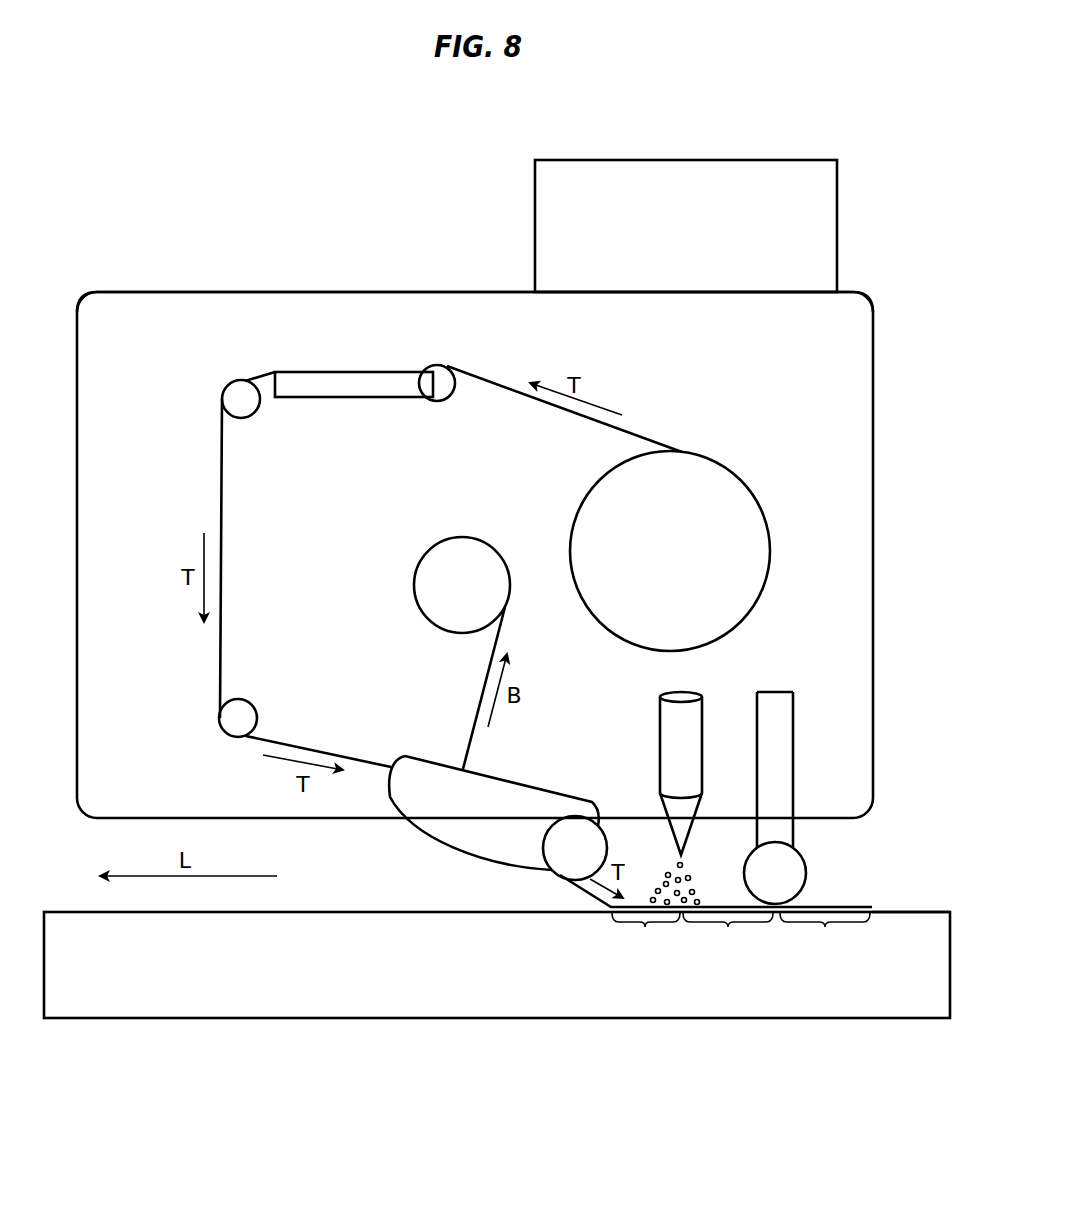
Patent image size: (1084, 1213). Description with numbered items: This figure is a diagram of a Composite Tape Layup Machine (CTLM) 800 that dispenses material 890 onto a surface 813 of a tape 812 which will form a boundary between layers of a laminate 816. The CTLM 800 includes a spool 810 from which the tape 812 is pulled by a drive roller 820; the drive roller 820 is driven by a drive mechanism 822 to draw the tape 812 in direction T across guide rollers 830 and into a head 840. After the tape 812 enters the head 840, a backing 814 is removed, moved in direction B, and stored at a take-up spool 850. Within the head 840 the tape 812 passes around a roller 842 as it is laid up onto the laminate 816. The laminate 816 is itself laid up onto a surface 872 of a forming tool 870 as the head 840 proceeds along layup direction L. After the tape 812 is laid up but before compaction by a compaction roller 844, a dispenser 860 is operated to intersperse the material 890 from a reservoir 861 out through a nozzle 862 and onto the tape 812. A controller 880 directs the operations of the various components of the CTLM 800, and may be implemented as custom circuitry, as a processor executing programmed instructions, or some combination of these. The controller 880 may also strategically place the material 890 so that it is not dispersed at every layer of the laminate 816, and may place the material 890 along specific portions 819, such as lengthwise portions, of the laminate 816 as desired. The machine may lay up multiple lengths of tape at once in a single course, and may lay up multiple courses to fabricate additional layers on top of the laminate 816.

The Composite Tape Layup Machine 800 is at (338, 178).
The spool 810 is at (749, 483).
The tape 812 is at (643, 432).
The surface 813 is at (722, 903).
The backing 814 is at (482, 693).
The laminate 816 is at (845, 904).
The portions 819 is at (741, 933).
The drive roller 820 is at (440, 401).
The drive mechanism 822 is at (353, 372).
The guide rollers 830 is at (228, 387).
The head 840 is at (467, 823).
The pad roller 842 is at (554, 873).
The compaction roller 844 is at (803, 863).
The take-up spool 850 is at (314, 292).
The dispenser 860 is at (475, 555).
The reservoir 861 is at (660, 712).
The nozzle 862 is at (690, 811).
The forming tool 870 is at (886, 1019).
The surface 872 is at (905, 905).
The controller 880 is at (670, 265).
The material 890 is at (660, 884).